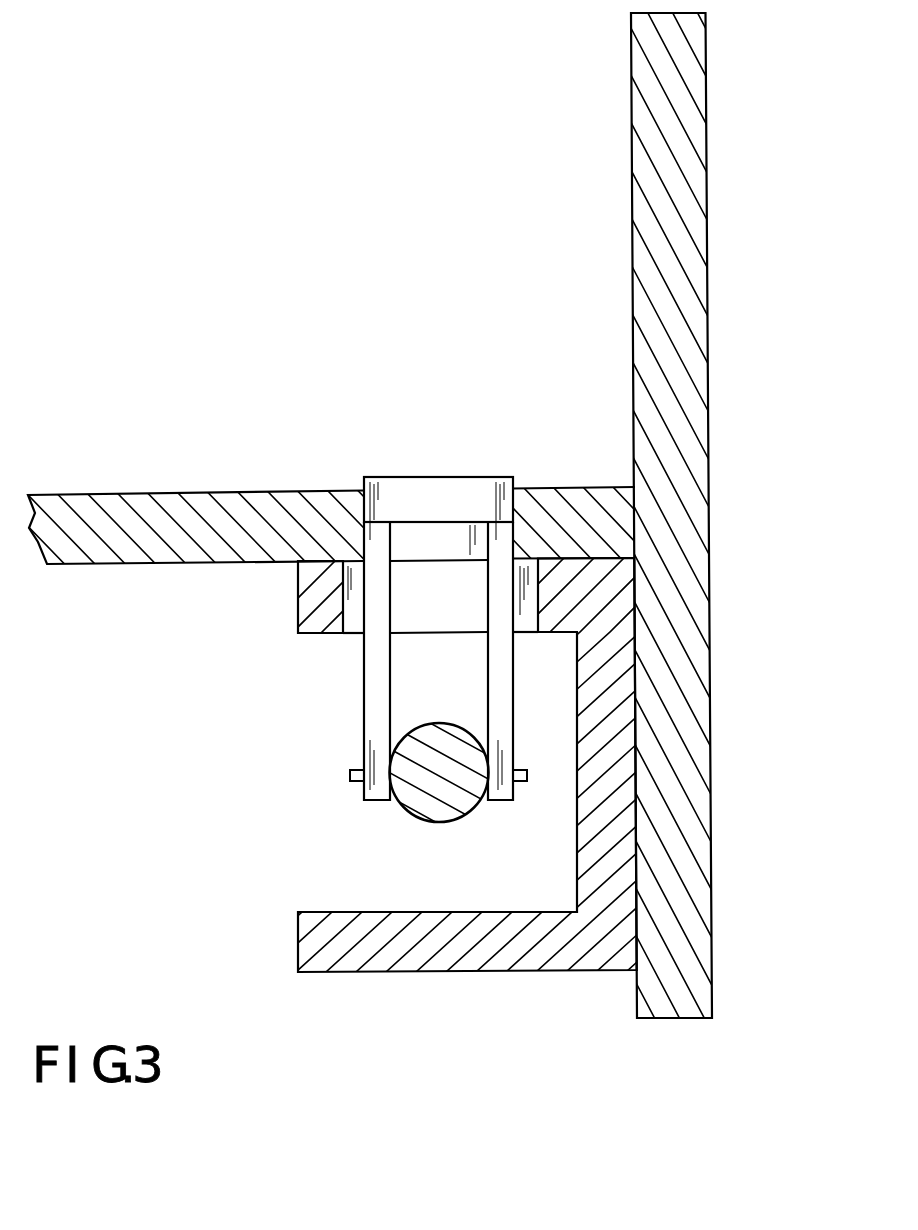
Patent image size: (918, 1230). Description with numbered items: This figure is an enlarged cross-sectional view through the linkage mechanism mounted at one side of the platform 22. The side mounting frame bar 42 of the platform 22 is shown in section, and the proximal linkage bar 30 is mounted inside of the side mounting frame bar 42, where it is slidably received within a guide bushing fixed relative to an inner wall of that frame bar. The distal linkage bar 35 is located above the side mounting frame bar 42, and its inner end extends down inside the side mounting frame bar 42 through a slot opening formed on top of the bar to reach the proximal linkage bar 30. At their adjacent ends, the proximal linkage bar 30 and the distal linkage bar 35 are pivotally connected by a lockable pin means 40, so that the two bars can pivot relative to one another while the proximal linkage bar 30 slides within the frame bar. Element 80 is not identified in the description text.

The platform 22 is at (160, 505).
The proximal linkage bar 30 is at (437, 793).
The distal linkage bar 35 is at (420, 498).
The lockable pin means 40 is at (350, 777).
The side mounting frame bar 42 is at (512, 948).
The wall 80 is at (690, 193).